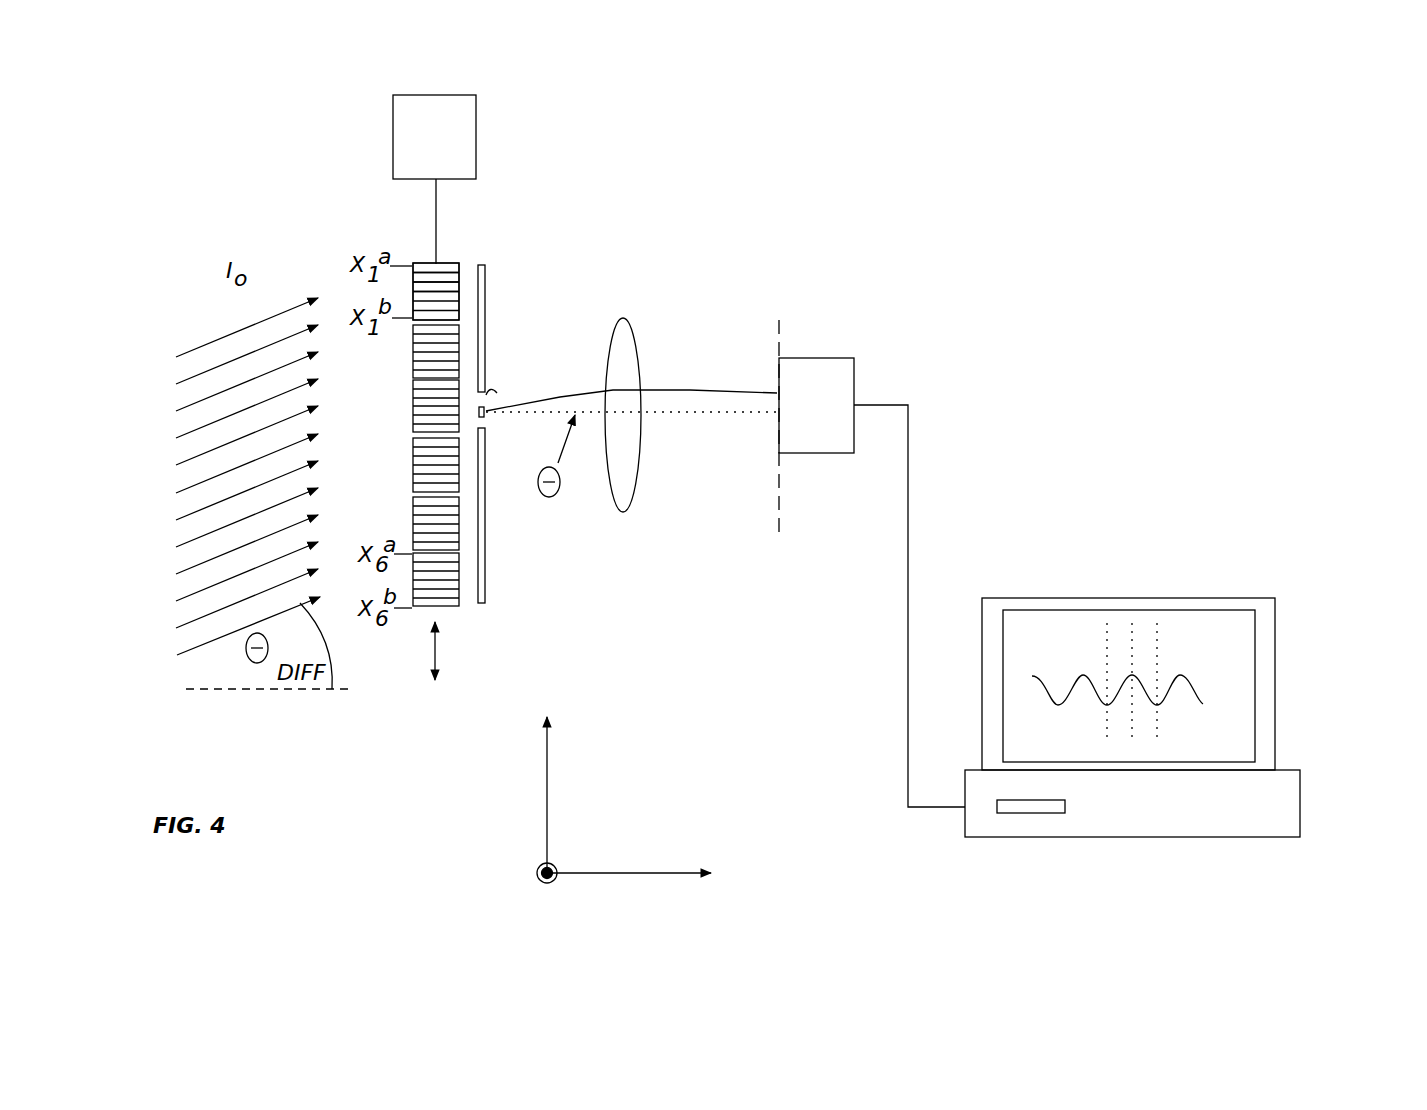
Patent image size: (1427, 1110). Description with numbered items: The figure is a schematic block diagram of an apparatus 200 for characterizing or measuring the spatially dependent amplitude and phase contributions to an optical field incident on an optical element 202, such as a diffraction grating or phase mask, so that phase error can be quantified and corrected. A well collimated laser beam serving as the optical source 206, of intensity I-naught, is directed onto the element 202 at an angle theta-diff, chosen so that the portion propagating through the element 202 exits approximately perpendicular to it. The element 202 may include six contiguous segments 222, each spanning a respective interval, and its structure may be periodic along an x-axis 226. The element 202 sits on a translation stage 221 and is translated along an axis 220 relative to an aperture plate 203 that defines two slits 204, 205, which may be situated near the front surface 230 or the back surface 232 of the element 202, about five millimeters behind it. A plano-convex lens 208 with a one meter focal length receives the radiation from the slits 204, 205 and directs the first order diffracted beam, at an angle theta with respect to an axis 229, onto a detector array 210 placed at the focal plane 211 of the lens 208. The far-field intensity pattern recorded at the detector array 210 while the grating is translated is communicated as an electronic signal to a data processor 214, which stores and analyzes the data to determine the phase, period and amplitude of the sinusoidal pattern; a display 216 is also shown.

The apparatus 200 is at (1040, 365).
The optical element 202 is at (458, 240).
The aperture plate 203 is at (486, 545).
The slit 204 is at (571, 391).
The slit 205 is at (486, 428).
The optical source 206 is at (203, 325).
The lens 208 is at (623, 320).
The detector array 210 is at (855, 370).
The focal plane 211 is at (781, 518).
The data processor 214 is at (1302, 808).
The display 216 is at (1235, 625).
The axis 220 is at (435, 650).
The translation stage 221 is at (477, 132).
The contiguous segments 222 is at (515, 621).
The x-axis 226 is at (550, 790).
The axis 229 is at (692, 412).
The front surface 230 is at (413, 268).
The back surface 232 is at (459, 277).